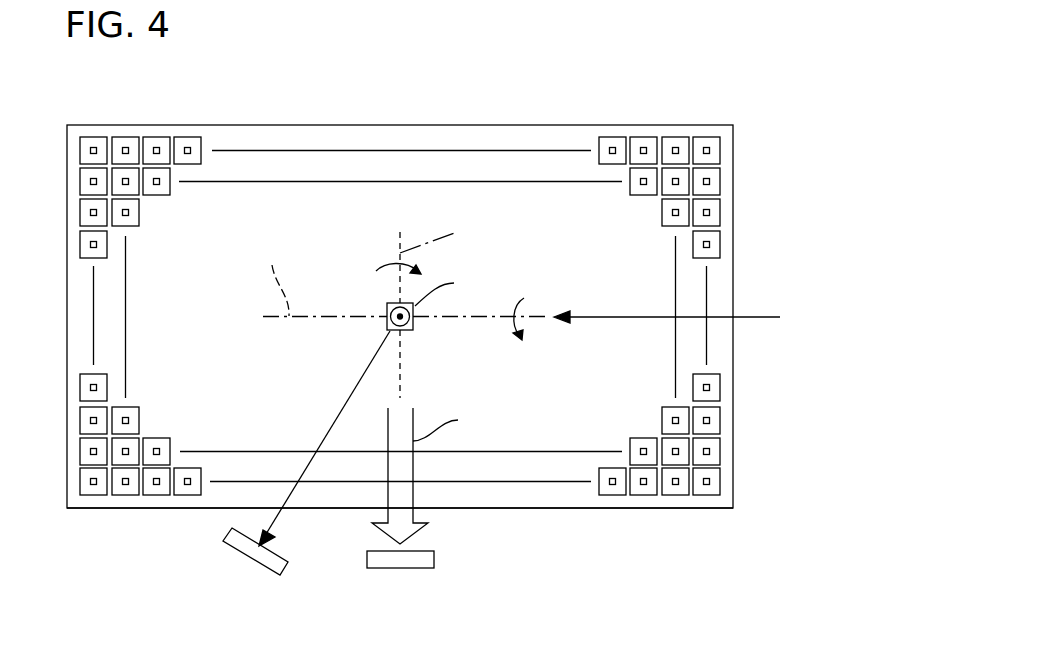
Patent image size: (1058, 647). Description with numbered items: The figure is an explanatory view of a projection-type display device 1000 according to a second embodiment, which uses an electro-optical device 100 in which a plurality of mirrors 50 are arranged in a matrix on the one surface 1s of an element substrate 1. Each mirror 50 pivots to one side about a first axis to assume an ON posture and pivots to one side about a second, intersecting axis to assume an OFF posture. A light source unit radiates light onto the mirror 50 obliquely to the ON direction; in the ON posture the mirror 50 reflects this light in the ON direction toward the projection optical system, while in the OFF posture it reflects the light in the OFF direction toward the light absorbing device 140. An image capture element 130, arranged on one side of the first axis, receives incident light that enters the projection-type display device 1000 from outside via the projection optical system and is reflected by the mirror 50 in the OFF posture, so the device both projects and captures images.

The projection-type display device 1000 is at (687, 78).
The electro-optical device 100 is at (525, 124).
The element substrate 1 is at (717, 509).
The one surface of element substrate 1s is at (654, 501).
The mirror 50 is at (167, 137).
The image capture element 130 is at (430, 568).
The light absorbing device 140 is at (284, 570).